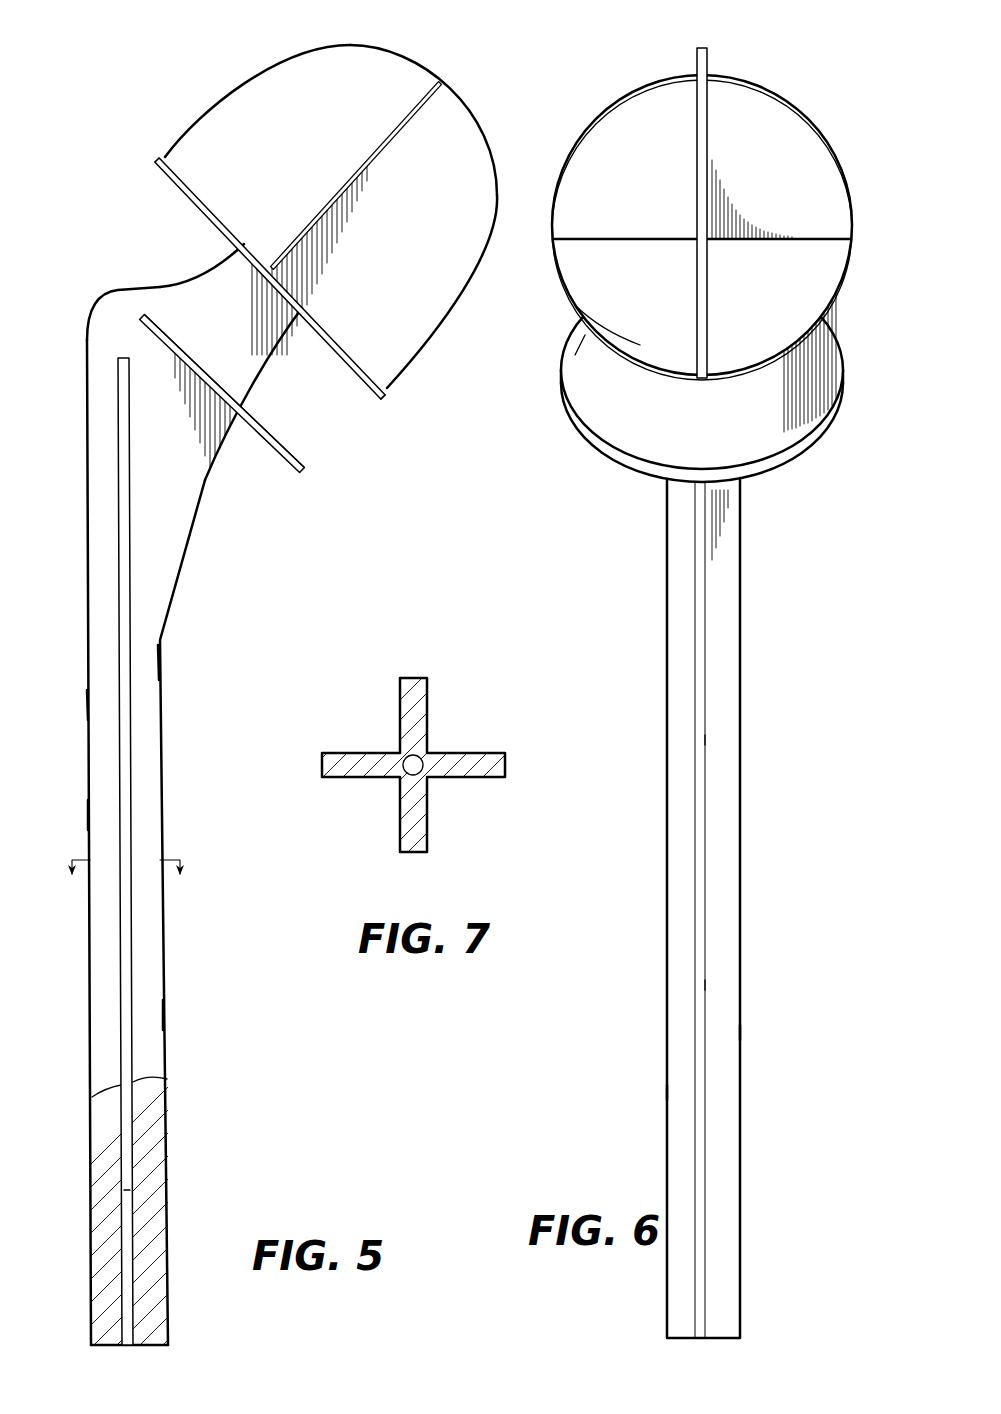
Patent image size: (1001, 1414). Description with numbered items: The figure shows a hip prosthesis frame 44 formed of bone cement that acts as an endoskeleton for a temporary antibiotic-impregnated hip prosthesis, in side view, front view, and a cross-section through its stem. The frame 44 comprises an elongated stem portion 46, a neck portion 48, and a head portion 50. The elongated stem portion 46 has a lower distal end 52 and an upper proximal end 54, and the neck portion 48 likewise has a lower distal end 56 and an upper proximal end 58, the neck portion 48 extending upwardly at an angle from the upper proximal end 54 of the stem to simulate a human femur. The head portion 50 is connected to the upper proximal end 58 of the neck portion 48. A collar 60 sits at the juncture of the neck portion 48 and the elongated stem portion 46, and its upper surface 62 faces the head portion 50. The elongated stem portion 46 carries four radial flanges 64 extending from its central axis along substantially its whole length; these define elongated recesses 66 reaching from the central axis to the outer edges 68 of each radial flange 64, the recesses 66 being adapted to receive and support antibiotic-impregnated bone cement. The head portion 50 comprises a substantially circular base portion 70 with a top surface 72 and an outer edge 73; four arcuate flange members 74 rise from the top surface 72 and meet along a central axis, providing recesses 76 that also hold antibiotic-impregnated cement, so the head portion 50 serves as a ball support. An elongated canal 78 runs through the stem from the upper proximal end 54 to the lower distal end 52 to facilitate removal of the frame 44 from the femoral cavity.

In FIG. 5, the prosthesis frame 44 is at (290, 563).
In FIG. 6, the prosthesis frame 44 is at (616, 555).
In FIG. 5, the elongated stem portion 46 is at (172, 703).
In FIG. 6, the elongated stem portion 46 is at (800, 849).
In FIG. 5, the neck portion 48 is at (172, 286).
In FIG. 5, the head portion 50 is at (470, 40).
In FIG. 6, the head portion 50 is at (792, 38).
In FIG. 5, the lower distal end 52 is at (152, 1343).
In FIG. 5, the upper proximal end 54 is at (86, 348).
In FIG. 5, the lower distal end 56 is at (108, 288).
In FIG. 5, the upper proximal end 58 is at (226, 254).
In FIG. 5, the collar 60 is at (262, 441).
In FIG. 6, the collar 60 is at (790, 480).
In FIG. 5, the upper surface 62 is at (263, 423).
In FIG. 6, the upper surface 62 is at (828, 397).
In FIG. 5, the radial flanges 64 is at (150, 655).
In FIG. 6, the radial flanges 64 is at (709, 740).
In FIG. 7, the radial flanges 64 is at (397, 705).
In FIG. 5, the elongated recesses 66 is at (112, 602).
In FIG. 6, the elongated recesses 66 is at (676, 853).
In FIG. 7, the elongated recesses 66 is at (498, 808).
In FIG. 5, the outer edges 68 is at (87, 810).
In FIG. 6, the outer edges 68 is at (705, 790).
In FIG. 5, the circular base portion 70 is at (366, 393).
In FIG. 6, the circular base portion 70 is at (858, 250).
In FIG. 5, the top surface 72 is at (362, 362).
In FIG. 6, the top surface 72 is at (588, 298).
In FIG. 5, the outer edge 73 is at (162, 150).
In FIG. 6, the outer edge 73 is at (583, 333).
In FIG. 5, the arcuate flange members 74 is at (232, 100).
In FIG. 6, the arcuate flange members 74 is at (706, 62).
In FIG. 5, the recesses 76 is at (352, 70).
In FIG. 6, the recesses 76 is at (603, 130).
In FIG. 5, the elongated canal 78 is at (310, 52).
In FIG. 6, the elongated canal 78 is at (696, 50).
In FIG. 7, the elongated canal 78 is at (428, 758).